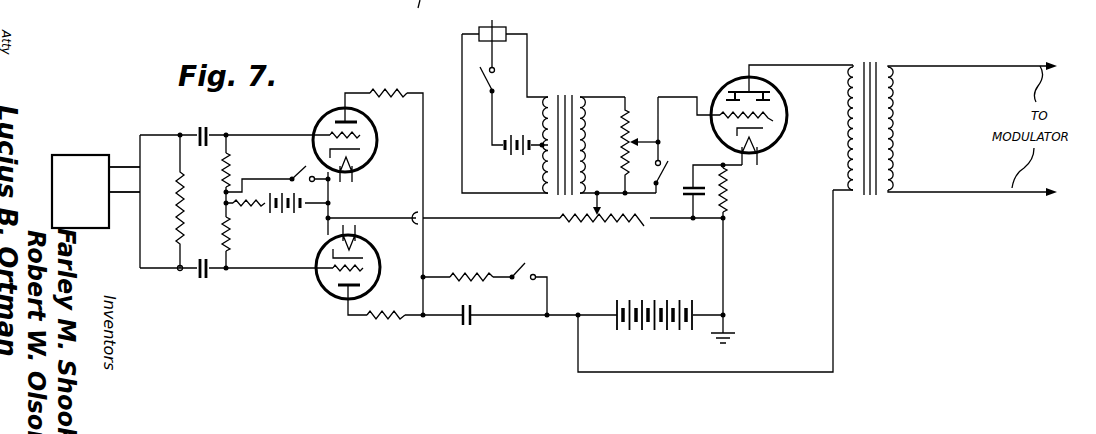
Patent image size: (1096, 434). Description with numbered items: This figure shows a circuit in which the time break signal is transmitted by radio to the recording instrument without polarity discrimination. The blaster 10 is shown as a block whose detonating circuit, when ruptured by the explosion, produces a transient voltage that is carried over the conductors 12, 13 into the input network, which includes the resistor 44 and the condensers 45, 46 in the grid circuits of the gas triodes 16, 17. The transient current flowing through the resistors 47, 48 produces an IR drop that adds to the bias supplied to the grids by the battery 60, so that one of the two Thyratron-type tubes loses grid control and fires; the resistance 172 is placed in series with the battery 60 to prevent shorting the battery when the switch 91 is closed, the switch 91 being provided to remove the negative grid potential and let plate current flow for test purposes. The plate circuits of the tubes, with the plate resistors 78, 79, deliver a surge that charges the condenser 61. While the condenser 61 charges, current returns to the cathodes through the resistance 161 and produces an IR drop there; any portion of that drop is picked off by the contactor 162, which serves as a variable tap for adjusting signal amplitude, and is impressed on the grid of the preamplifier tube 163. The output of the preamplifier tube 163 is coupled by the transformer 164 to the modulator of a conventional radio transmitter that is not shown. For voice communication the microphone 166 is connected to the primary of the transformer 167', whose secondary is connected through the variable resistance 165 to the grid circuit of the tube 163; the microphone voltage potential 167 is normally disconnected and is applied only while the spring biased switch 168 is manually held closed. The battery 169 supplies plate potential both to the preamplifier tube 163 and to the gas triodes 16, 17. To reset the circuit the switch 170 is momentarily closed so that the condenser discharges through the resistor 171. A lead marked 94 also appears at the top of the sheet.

The blaster 10 is at (88, 142).
The conductor 12 is at (124, 167).
The conductor 13 is at (124, 195).
The resistor 44 is at (183, 222).
The condenser 45 is at (204, 128).
The condenser 46 is at (204, 280).
The resistor 47 is at (231, 250).
The resistor 48 is at (232, 170).
The resistance 172 is at (252, 200).
The switch 91 is at (303, 172).
The battery 60 is at (292, 216).
The gas triode tube 16 is at (383, 134).
The gas triode tube 17 is at (380, 250).
The resistor 78 is at (391, 89).
The resistor 79 is at (399, 310).
The resistor 171 is at (484, 271).
The switch 170 is at (522, 266).
The condenser 61 is at (468, 322).
The battery 169 is at (652, 330).
The resistance 161 is at (607, 226).
The contactor 162 is at (602, 209).
The microphone 166 is at (480, 30).
The spring biased switch 168 is at (496, 78).
The voltage potential 167 is at (518, 140).
The transformer 167' is at (599, 129).
The variable resistance 165 is at (630, 112).
The preamplifier tube 163 is at (794, 103).
The transformer 164 is at (875, 60).
The lead 94 is at (600, 0).